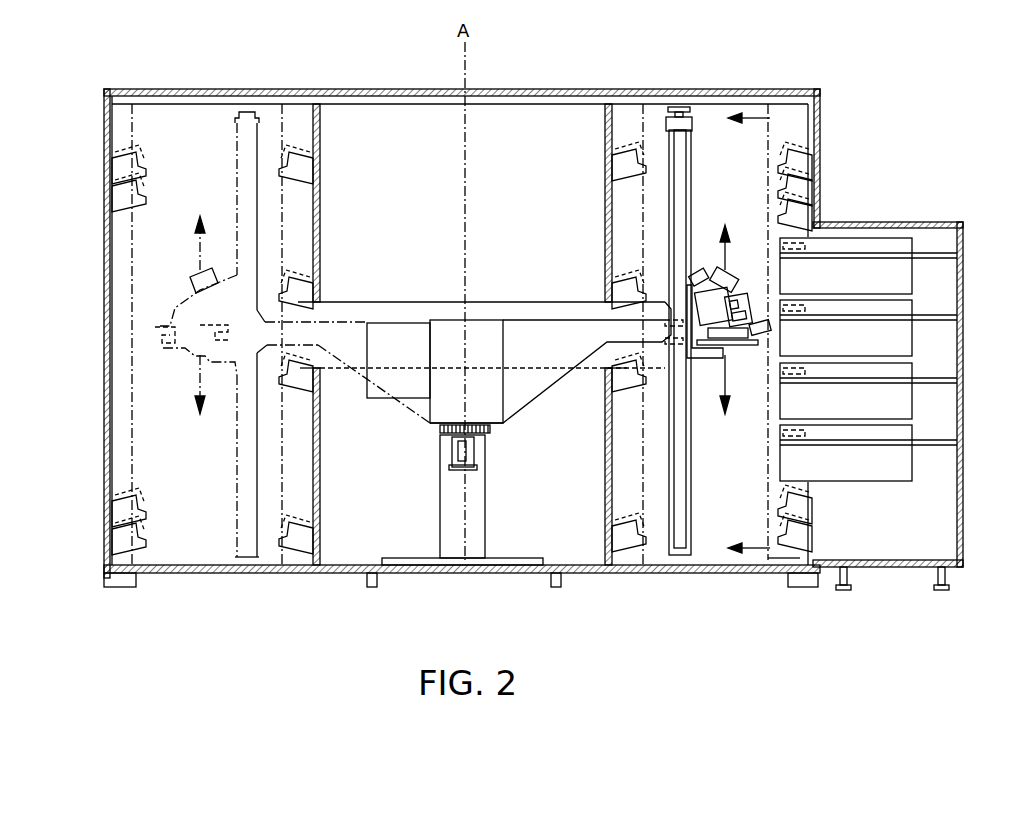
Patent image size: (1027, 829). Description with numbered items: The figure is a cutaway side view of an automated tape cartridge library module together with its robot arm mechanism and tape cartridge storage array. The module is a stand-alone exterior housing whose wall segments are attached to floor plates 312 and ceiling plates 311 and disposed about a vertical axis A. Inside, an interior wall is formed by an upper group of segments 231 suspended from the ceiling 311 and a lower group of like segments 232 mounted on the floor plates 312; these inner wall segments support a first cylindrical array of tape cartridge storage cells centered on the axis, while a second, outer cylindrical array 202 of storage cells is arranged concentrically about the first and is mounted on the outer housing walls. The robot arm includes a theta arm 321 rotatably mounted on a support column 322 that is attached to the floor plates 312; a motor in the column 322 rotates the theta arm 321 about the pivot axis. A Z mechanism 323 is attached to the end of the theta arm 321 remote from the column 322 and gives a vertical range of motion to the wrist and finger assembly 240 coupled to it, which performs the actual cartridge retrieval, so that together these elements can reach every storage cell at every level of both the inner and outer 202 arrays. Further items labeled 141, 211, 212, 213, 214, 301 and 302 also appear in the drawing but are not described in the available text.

The ceiling plate 311 is at (583, 92).
The floor plate 312 is at (600, 574).
The magazine compartment 141 is at (945, 528).
The cassette tray 211 is at (898, 270).
The cassette tray 212 is at (900, 340).
The cassette tray 213 is at (900, 405).
The cassette tray 214 is at (900, 465).
The outer cylindrical array of tape cartridge storage cells 202 is at (782, 158).
The upper inner wall segments 231 is at (324, 175).
The lower inner wall segments 232 is at (322, 437).
The upper guide tube 301 is at (290, 172).
The lower guide tube 302 is at (290, 540).
The theta arm 321 is at (558, 340).
The support column 322 is at (440, 512).
The Z mechanism 323 is at (693, 526).
The wrist and finger assembly 240 is at (720, 284).